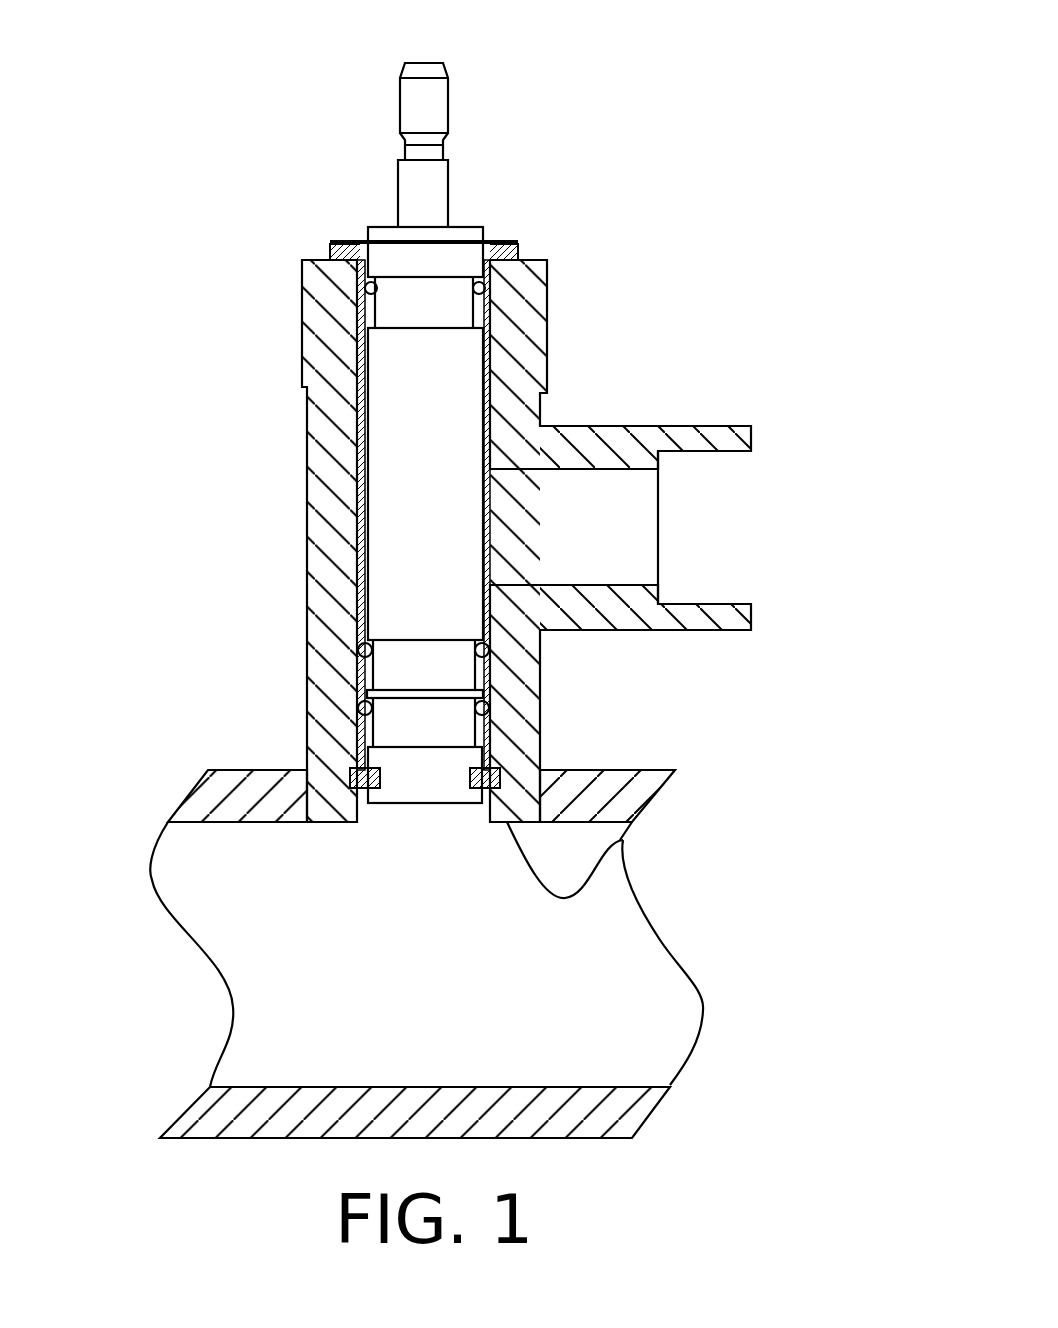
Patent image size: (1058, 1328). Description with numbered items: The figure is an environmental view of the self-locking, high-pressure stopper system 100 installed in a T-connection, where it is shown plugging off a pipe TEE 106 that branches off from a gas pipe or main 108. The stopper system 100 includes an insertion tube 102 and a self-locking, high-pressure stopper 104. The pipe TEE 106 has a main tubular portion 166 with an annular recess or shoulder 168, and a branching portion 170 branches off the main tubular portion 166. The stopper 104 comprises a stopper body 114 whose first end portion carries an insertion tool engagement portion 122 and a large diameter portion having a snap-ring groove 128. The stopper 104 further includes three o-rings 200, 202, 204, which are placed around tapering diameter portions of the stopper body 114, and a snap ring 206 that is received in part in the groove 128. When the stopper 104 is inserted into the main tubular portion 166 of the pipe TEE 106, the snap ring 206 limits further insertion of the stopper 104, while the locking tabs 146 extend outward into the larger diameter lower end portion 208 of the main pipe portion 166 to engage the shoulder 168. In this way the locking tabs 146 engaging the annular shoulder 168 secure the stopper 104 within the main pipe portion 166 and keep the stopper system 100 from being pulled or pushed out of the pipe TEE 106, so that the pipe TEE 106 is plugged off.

The self-locking, high-pressure stopper system 100 is at (520, 120).
The insertion tube 102 is at (503, 245).
The self-locking, high-pressure stopper 104 is at (360, 168).
The pipe TEE 106 is at (555, 404).
The gas pipe or main 108 is at (600, 792).
The stopper body 114 is at (413, 373).
The insertion tool engagement portion 122 is at (428, 103).
The snap-ring groove 128 is at (473, 230).
The locking tabs 146 is at (367, 788).
The main tubular portion 166 is at (333, 465).
The annular recess or shoulder 168 is at (352, 770).
The branching portion 170 is at (626, 449).
The o-ring 200 is at (490, 300).
The o-ring 202 is at (487, 650).
The o-ring 204 is at (487, 708).
The snap ring 206 is at (360, 242).
The larger diameter lower end portion 208 is at (463, 812).